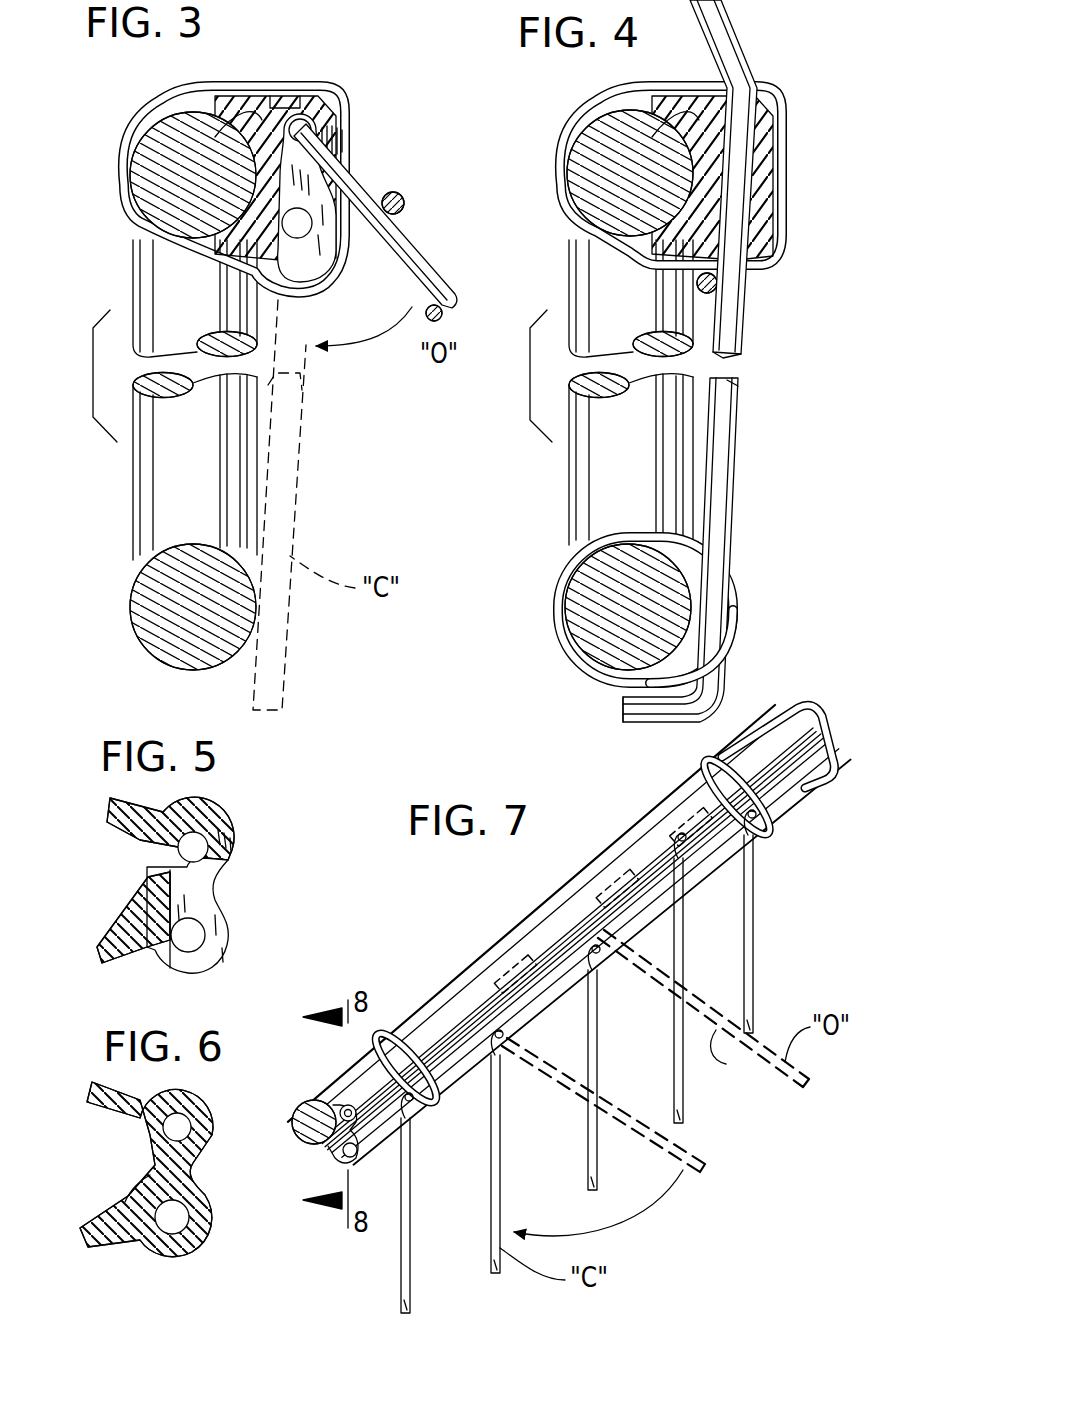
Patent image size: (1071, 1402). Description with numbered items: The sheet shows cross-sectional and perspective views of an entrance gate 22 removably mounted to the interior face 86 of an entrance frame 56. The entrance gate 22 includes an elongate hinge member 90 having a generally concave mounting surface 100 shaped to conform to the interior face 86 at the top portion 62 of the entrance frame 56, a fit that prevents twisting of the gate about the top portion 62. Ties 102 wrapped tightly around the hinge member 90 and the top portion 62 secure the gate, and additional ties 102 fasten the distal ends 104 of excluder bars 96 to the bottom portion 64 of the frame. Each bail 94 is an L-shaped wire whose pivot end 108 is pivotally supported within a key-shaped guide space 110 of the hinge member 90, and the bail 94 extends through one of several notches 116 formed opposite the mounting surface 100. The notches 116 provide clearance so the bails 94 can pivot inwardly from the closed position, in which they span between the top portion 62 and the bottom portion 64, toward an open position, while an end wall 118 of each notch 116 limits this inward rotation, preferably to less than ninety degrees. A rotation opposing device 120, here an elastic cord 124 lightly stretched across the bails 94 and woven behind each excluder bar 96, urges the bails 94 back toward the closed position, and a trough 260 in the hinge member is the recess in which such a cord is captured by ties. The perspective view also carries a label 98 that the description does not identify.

In FIG. 3, the entrance gate 22 is at (327, 80).
In FIG. 4, the entrance gate 22 is at (787, 92).
In FIG. 7, the entrance gate 22 is at (788, 851).
In FIG. 3, the entrance frame 56 is at (165, 477).
In FIG. 4, the entrance frame 56 is at (595, 483).
In FIG. 7, the entrance frame 56 is at (312, 1132).
In FIG. 3, the top portion 62 is at (158, 183).
In FIG. 4, the top portion 62 is at (600, 162).
In FIG. 7, the top portion 62 is at (326, 1085).
In FIG. 3, the bottom portion 64 is at (160, 605).
In FIG. 4, the bottom portion 64 is at (590, 617).
In FIG. 3, the interior face 86 is at (262, 450).
In FIG. 4, the interior face 86 is at (692, 407).
In FIG. 3, the hinge member 90 is at (271, 112).
In FIG. 5, the hinge member 90 is at (200, 812).
In FIG. 6, the hinge member 90 is at (180, 1095).
In FIG. 7, the hinge member 90 is at (660, 824).
In FIG. 3, the bail 94 is at (405, 255).
In FIG. 7, the bail 94 is at (500, 1160).
In FIG. 4, the excluder bar 96 is at (738, 470).
In FIG. 7, the excluder bar 96 is at (752, 968).
In FIG. 7, the clamp strap 98 is at (387, 1058).
In FIG. 3, the mounting surface 100 is at (215, 137).
In FIG. 4, the mounting surface 100 is at (642, 137).
In FIG. 5, the mounting surface 100 is at (142, 912).
In FIG. 6, the mounting surface 100 is at (125, 1202).
In FIG. 3, the tie 102 is at (205, 97).
In FIG. 4, the tie 102 is at (620, 97).
In FIG. 7, the tie 102 is at (802, 742).
In FIG. 4, the distal end 104 is at (645, 718).
In FIG. 3, the pivot end 108 is at (312, 110).
In FIG. 7, the pivot end 108 is at (600, 882).
In FIG. 3, the guide space 110 is at (300, 118).
In FIG. 4, the guide space 110 is at (788, 155).
In FIG. 5, the guide space 110 is at (166, 854).
In FIG. 6, the guide space 110 is at (158, 1135).
In FIG. 7, the guide space 110 is at (345, 1150).
In FIG. 3, the notch 116 is at (328, 262).
In FIG. 5, the notch 116 is at (202, 883).
In FIG. 7, the notch 116 is at (698, 880).
In FIG. 3, the end wall 118 is at (335, 142).
In FIG. 5, the end wall 118 is at (228, 845).
In FIG. 3, the rotation opposing device 120 is at (403, 185).
In FIG. 7, the rotation opposing device 120 is at (446, 1102).
In FIG. 3, the elastic cord 124 is at (403, 203).
In FIG. 4, the elastic cord 124 is at (715, 312).
In FIG. 5, the trough 260 is at (144, 960).
In FIG. 6, the trough 260 is at (124, 1246).